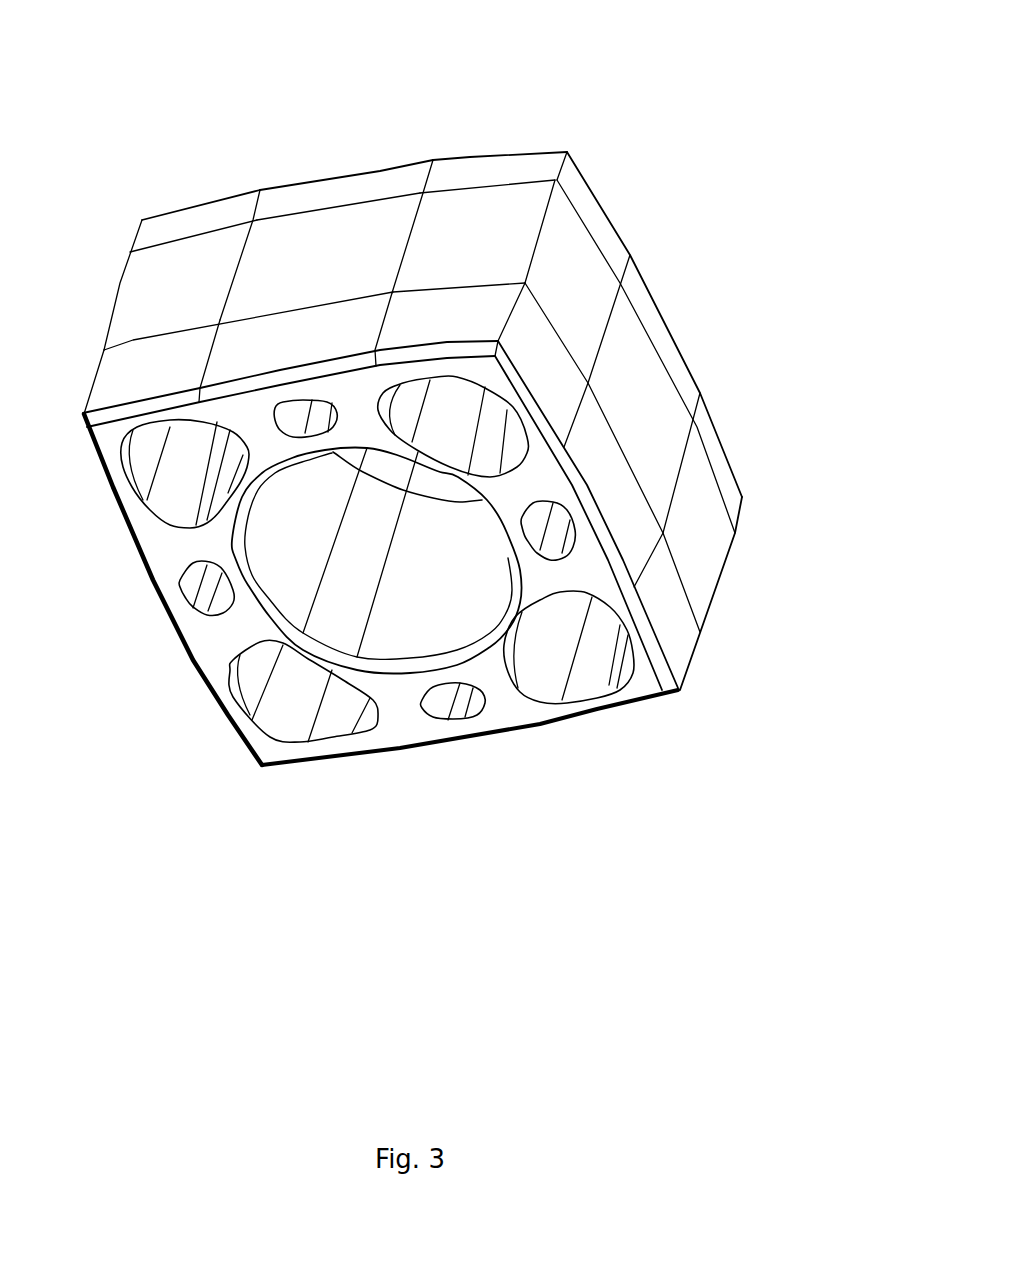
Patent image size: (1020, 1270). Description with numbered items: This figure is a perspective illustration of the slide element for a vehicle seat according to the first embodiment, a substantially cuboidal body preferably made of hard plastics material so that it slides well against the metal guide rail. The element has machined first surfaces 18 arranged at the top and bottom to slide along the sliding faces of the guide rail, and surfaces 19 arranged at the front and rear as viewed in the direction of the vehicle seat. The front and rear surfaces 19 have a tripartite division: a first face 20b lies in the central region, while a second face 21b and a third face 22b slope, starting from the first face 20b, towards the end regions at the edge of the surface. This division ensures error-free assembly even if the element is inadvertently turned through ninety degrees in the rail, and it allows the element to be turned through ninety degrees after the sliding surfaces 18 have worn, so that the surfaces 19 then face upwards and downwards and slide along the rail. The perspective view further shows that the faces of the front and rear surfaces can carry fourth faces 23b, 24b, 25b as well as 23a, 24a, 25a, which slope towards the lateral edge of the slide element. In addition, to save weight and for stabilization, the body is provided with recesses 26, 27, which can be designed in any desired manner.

The first surfaces 18 is at (777, 478).
The surfaces 19 is at (632, 93).
The first face 20b is at (316, 262).
The second face 21b is at (142, 268).
The third face 22b is at (482, 220).
The fourth face 23a is at (115, 383).
The fourth face 23b is at (200, 224).
The fourth face 24a is at (410, 305).
The fourth face 24b is at (538, 178).
The fourth face 25a is at (240, 333).
The fourth face 25b is at (380, 195).
The recess 26 is at (483, 427).
The recess 27 is at (553, 535).